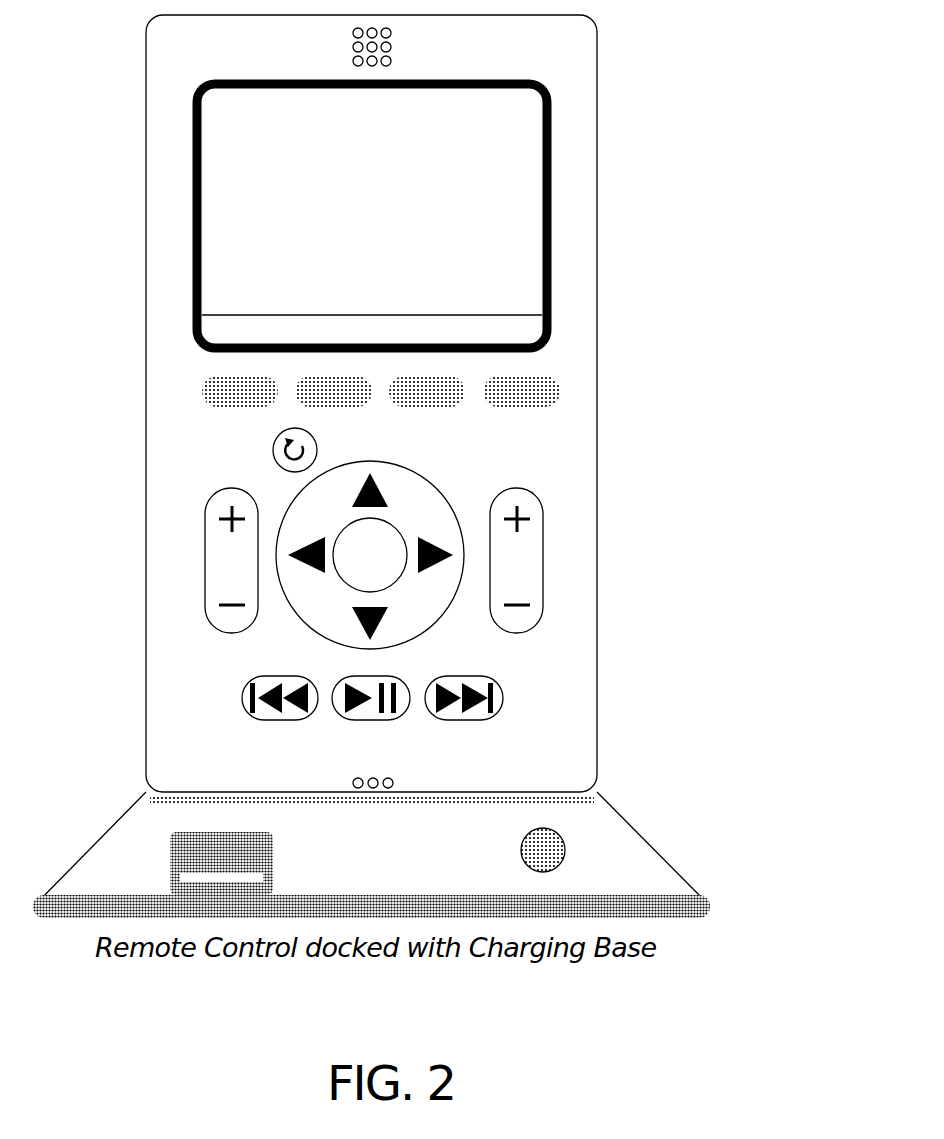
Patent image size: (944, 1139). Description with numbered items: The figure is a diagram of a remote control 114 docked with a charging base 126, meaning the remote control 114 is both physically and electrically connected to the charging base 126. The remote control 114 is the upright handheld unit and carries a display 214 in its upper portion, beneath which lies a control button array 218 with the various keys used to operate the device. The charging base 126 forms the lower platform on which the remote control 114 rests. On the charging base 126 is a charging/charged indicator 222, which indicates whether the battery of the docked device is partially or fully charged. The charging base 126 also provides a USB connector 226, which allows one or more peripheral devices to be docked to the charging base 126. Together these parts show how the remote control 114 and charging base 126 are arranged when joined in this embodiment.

The remote control 114 is at (597, 428).
The display 214 is at (523, 267).
The control button array 218 is at (637, 592).
The charging base 126 is at (665, 865).
The charging/charged indicator 222 is at (565, 850).
The USB connector 226 is at (170, 842).